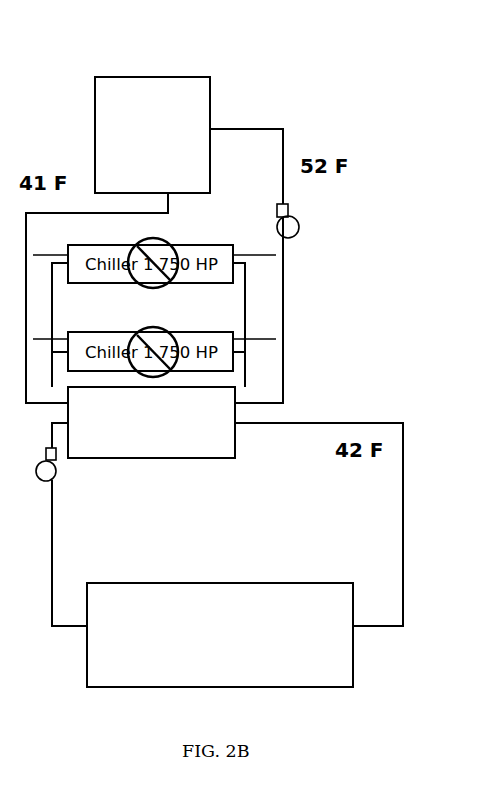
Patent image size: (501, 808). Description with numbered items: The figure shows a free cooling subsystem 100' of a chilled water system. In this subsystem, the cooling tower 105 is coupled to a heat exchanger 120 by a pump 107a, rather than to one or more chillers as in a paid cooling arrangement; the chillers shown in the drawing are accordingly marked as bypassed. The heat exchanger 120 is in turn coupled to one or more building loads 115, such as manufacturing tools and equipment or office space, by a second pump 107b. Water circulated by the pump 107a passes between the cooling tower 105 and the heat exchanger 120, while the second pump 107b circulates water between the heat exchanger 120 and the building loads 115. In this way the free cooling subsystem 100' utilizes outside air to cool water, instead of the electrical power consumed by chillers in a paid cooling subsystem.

The free cooling subsystem 100' is at (43, 91).
The cooling tower 105 is at (210, 108).
The pump 107a is at (293, 236).
The second pump 107b is at (52, 478).
The building loads 115 is at (220, 583).
The heat exchanger 120 is at (198, 455).